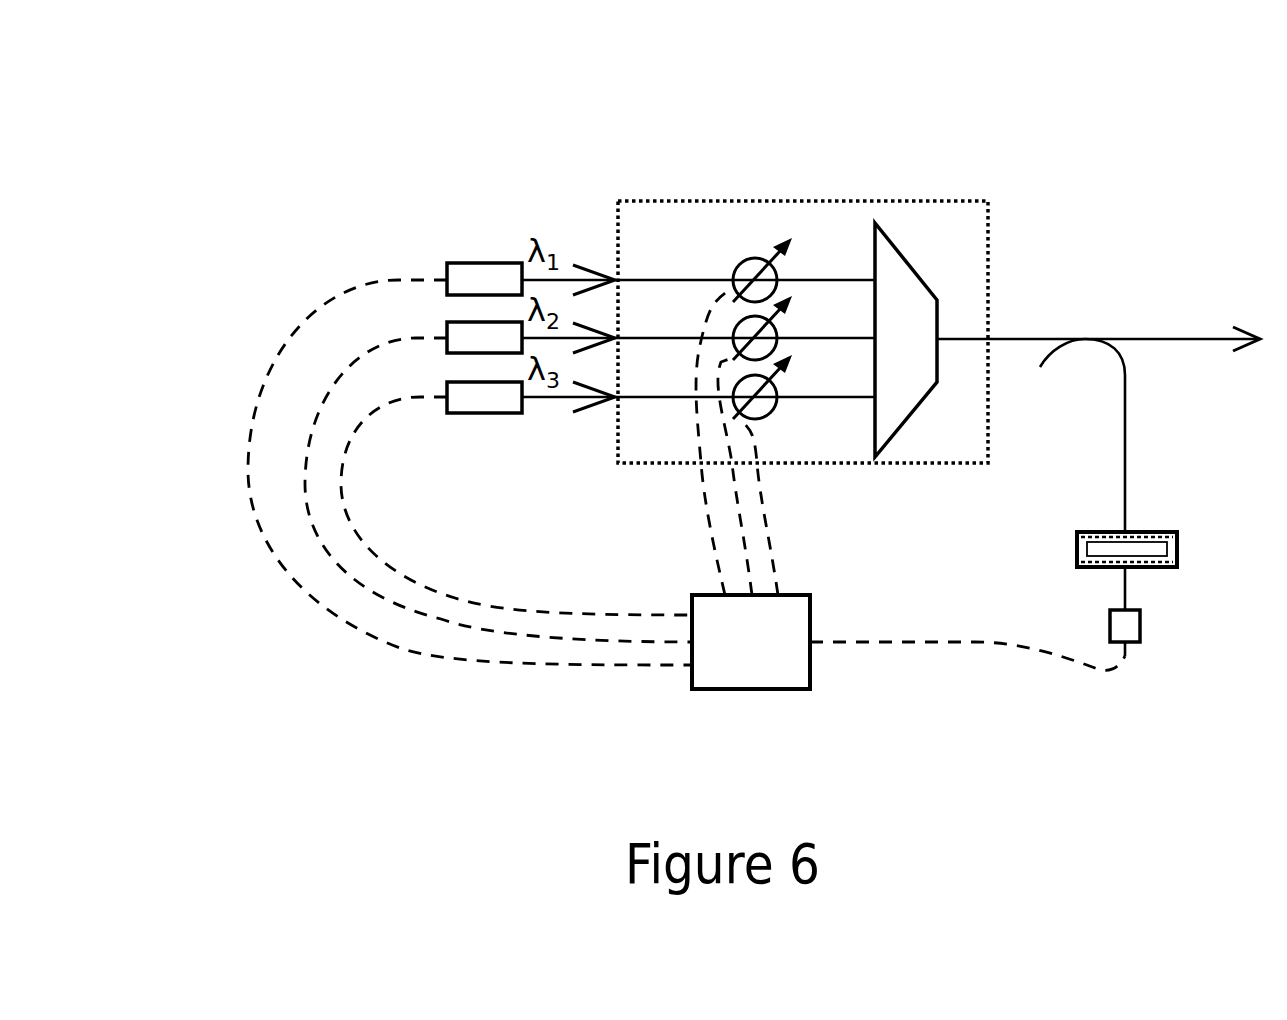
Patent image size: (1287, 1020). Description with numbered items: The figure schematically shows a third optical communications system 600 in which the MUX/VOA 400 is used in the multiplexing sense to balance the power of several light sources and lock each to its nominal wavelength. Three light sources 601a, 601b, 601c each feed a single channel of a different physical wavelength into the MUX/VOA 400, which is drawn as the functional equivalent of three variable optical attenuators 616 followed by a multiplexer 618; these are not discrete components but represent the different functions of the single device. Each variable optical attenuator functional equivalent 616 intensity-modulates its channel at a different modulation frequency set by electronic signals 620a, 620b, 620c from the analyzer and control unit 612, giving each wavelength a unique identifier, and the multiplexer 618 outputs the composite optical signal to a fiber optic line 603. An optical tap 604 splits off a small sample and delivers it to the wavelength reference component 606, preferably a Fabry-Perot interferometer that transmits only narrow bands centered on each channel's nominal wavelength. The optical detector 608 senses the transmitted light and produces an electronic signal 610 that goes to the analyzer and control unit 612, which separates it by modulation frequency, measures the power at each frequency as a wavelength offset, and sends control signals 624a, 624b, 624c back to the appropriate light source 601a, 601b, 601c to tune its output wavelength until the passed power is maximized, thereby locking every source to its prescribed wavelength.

The third system 600 is at (505, 58).
The MUX/VOA 400 is at (793, 201).
The light source 601a is at (478, 263).
The light source 601b is at (447, 330).
The light source 601c is at (490, 413).
The variable optical attenuator functional equivalent 616 is at (779, 274).
The multiplexer 618 is at (912, 269).
The fiber optic line 603 is at (1176, 340).
The optical tap 604 is at (1085, 341).
The wavelength reference component 606 is at (1168, 531).
The optical detector 608 is at (1143, 623).
The electronic signal 610 is at (974, 638).
The analyzer and control unit 612 is at (812, 677).
The electronic signal 620a is at (725, 566).
The electronic signal 620b is at (736, 494).
The electronic signal 620c is at (778, 567).
The control signal 624a is at (285, 568).
The control signal 624b is at (300, 478).
The control signal 624c is at (455, 598).